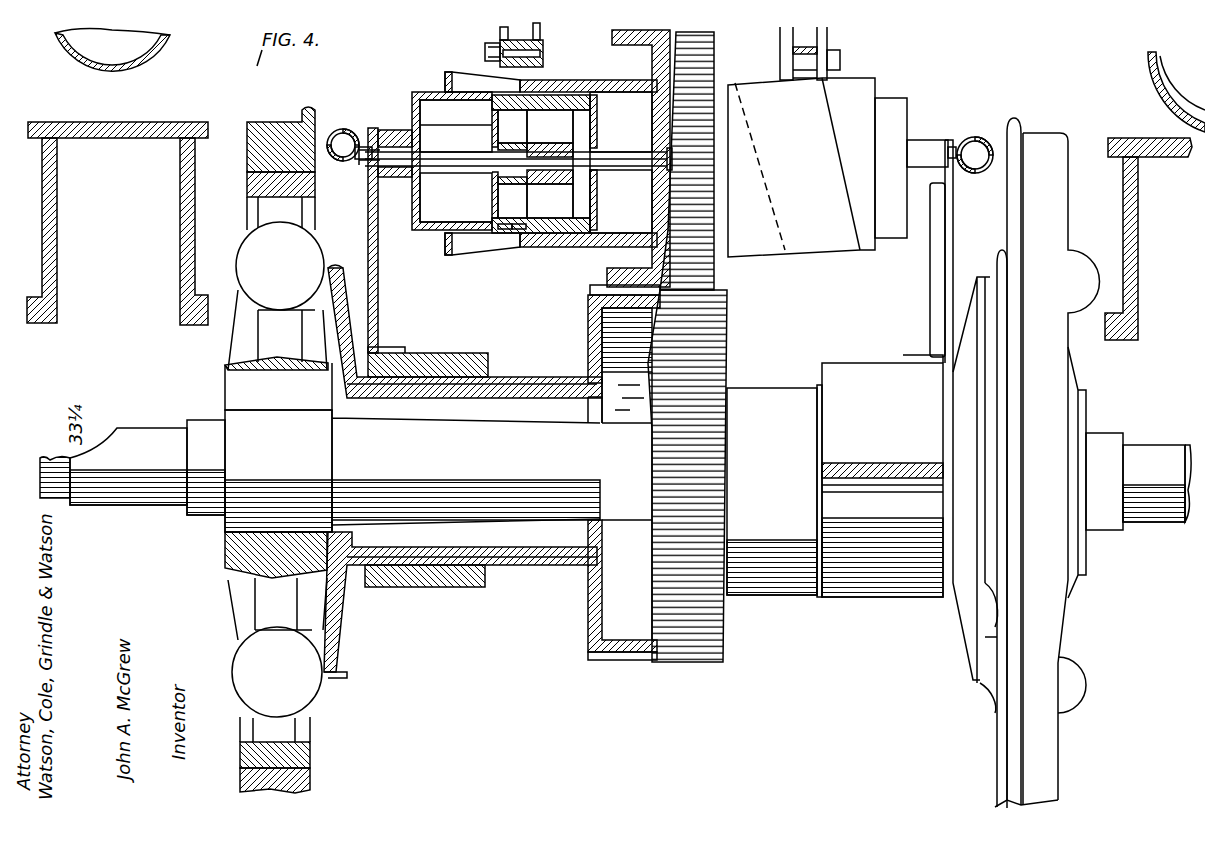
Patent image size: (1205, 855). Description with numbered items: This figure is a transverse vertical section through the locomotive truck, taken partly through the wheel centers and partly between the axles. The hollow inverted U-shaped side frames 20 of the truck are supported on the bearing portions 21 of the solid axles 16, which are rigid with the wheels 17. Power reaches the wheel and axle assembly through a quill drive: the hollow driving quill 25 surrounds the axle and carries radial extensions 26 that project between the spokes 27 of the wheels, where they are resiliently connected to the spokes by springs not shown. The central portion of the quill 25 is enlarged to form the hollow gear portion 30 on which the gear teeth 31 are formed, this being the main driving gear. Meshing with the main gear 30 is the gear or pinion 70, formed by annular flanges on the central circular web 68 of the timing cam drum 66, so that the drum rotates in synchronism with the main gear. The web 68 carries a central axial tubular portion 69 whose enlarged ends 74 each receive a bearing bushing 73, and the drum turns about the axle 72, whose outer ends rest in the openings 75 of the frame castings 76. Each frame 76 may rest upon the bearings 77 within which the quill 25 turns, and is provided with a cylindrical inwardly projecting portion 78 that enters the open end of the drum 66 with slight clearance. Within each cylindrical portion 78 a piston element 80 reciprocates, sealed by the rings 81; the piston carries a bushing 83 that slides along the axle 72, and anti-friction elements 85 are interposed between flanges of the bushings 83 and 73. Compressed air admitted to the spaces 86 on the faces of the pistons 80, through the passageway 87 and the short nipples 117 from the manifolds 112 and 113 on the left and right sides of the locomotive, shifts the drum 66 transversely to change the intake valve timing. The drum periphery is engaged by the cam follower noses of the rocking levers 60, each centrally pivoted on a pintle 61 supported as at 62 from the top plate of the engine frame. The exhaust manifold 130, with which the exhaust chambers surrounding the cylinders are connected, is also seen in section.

The exhaust manifold 130 is at (178, 68).
The side frames 20 is at (180, 197).
The wheels 17 is at (258, 122).
The spokes 27 is at (262, 322).
The bearing portions 21 is at (132, 443).
The axles 16 is at (548, 510).
The radial extensions 26 is at (310, 273).
The bearings 77 is at (435, 368).
The driving quill 25 is at (495, 580).
The frame casting 76 is at (375, 273).
The spaces 86 is at (412, 125).
The openings 75 is at (370, 197).
The passageway 87 is at (365, 130).
The manifold 113 is at (338, 130).
The short nipples 117 is at (362, 163).
The axle 72 is at (672, 160).
The piston elements 80 is at (492, 132).
The bushing 83 is at (490, 172).
The enlarged ends 74 is at (565, 143).
The anti-friction elements 85 is at (538, 143).
The bearing bushings 73 is at (540, 172).
The timing cam drum 66 is at (568, 82).
The cylindrical inwardly projecting portions 78 is at (437, 88).
The central circular web 68 is at (655, 125).
The central axial tubular portion 69 is at (606, 178).
The rings 81 is at (513, 213).
The gear or pinion 70 is at (607, 275).
The pintle support 62 is at (497, 32).
The pintle 61 is at (540, 55).
The rocking lever 60 is at (485, 53).
The gear teeth 31 is at (727, 292).
The gear portion 30 is at (587, 620).
The manifold 112 is at (982, 136).